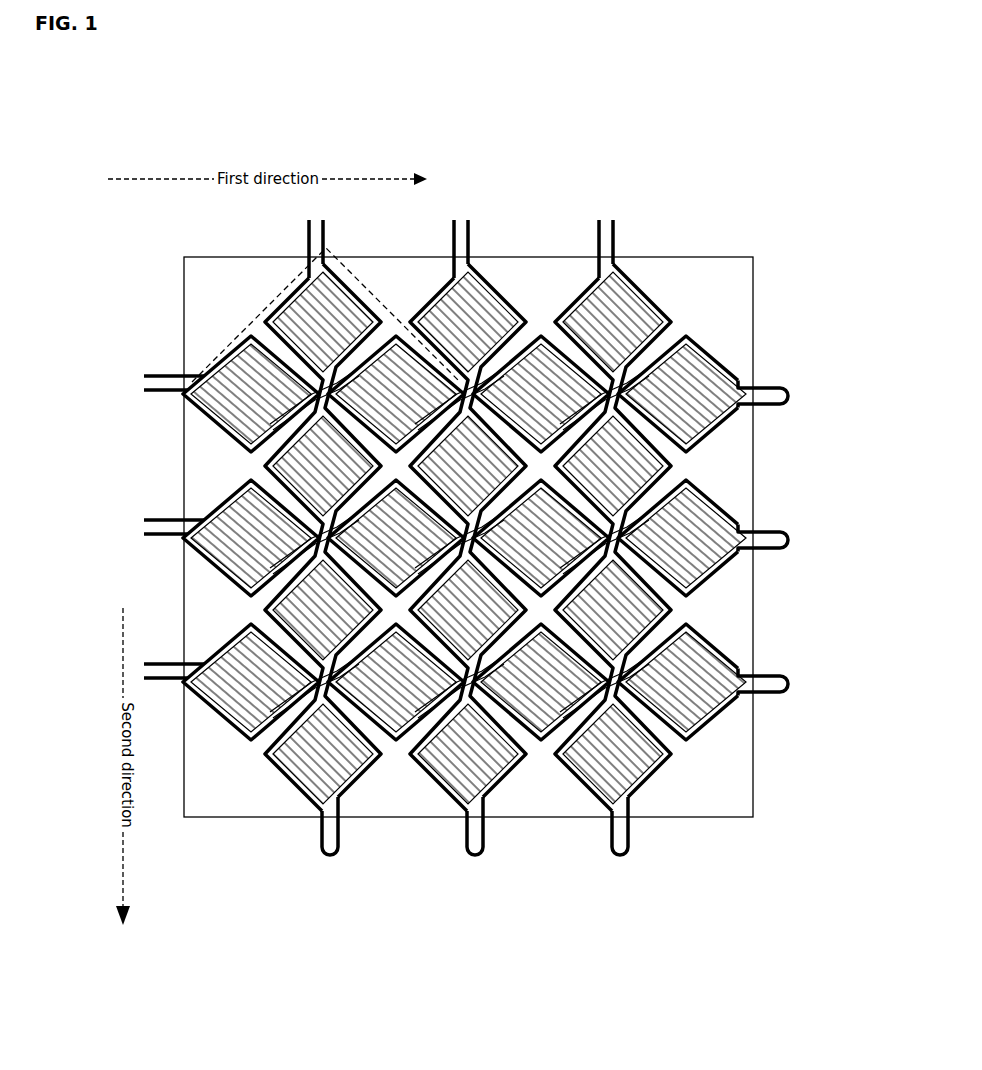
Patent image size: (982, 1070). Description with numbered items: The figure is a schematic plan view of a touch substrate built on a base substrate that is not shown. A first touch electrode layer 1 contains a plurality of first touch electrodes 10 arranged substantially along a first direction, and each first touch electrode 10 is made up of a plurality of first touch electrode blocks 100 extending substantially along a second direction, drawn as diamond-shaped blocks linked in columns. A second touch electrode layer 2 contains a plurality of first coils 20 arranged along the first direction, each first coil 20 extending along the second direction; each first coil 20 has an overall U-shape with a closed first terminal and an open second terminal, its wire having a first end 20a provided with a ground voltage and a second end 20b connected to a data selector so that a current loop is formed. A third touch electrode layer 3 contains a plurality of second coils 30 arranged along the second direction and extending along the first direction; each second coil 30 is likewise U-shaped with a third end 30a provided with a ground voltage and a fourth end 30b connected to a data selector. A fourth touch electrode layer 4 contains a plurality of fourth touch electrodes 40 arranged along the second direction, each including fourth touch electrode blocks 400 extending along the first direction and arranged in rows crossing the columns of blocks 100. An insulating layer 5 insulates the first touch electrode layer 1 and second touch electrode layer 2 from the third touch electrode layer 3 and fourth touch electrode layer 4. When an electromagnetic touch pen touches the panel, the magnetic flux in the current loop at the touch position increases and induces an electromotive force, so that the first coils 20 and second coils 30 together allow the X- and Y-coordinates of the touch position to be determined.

The first touch electrode layer 1 is at (397, 133).
The second touch electrode layer 2 is at (332, 912).
The third touch electrode layer 3 is at (848, 402).
The fourth touch electrode layer 4 is at (97, 289).
The insulating layer 5 is at (757, 762).
The first touch electrode 10 is at (634, 305).
The first coil 20 is at (620, 885).
The first end 20a is at (437, 241).
The second end 20b is at (468, 234).
The second coil 30 is at (815, 687).
The third end 30a is at (153, 534).
The fourth end 30b is at (161, 509).
The fourth touch electrode 40 is at (222, 667).
The first touch electrode block 100 is at (468, 538).
The fourth touch electrode block 400 is at (468, 538).